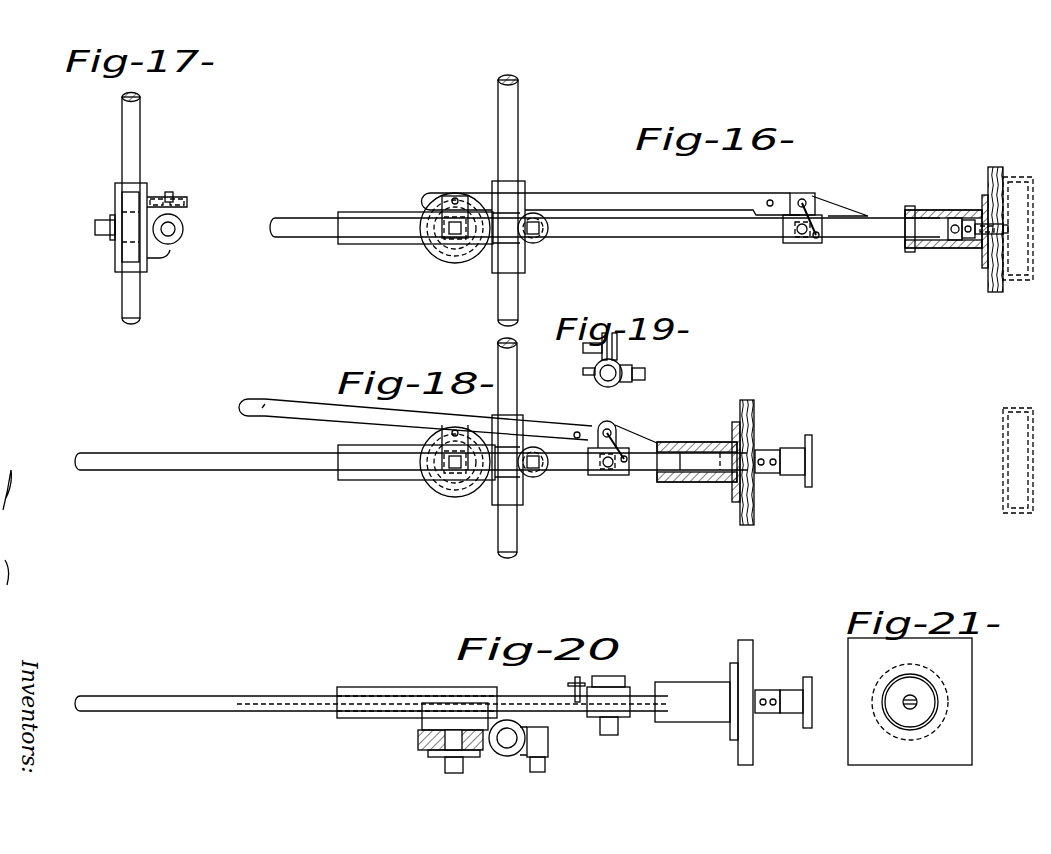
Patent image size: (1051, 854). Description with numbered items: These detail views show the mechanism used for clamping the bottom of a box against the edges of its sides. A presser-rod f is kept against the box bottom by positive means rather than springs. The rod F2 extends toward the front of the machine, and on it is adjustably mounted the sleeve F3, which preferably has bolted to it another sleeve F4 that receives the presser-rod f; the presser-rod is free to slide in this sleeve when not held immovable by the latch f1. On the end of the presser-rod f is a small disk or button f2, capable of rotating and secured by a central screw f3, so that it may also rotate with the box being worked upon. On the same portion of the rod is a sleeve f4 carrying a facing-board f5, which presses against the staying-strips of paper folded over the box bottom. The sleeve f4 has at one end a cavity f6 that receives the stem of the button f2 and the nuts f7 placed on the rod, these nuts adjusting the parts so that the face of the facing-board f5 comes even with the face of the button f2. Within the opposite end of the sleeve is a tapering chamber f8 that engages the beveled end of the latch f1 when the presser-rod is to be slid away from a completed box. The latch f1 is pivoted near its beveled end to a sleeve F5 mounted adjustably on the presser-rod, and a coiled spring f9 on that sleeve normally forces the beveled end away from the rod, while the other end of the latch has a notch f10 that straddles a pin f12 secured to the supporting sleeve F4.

In FIG. 16, the presser-rod f is at (605, 233).
In FIG. 18, the presser-rod f is at (411, 467).
In FIG. 20, the presser-rod f is at (371, 699).
In FIG. 16, the latch f1 is at (645, 198).
In FIG. 18, the latch f1 is at (461, 410).
In FIG. 16, the disk or button f2 is at (1003, 228).
In FIG. 18, the disk or button f2 is at (812, 462).
In FIG. 20, the disk or button f2 is at (808, 702).
In FIG. 21, the disk or button f2 is at (910, 702).
In FIG. 16, the central screw f3 is at (1006, 233).
In FIG. 21, the central screw f3 is at (917, 701).
In FIG. 16, the sleeve f4 is at (954, 218).
In FIG. 18, the sleeve f4 is at (694, 446).
In FIG. 20, the sleeve f4 is at (692, 702).
In FIG. 16, the facing-board f5 is at (991, 218).
In FIG. 18, the facing-board f5 is at (753, 461).
In FIG. 20, the facing-board f5 is at (743, 691).
In FIG. 21, the facing-board f5 is at (910, 701).
In FIG. 16, the cavity f6 is at (968, 220).
In FIG. 18, the cavity f6 is at (720, 483).
In FIG. 18, the nuts f7 is at (768, 474).
In FIG. 20, the nuts f7 is at (764, 713).
In FIG. 16, the tapering chamber f8 is at (926, 248).
In FIG. 18, the tapering chamber f8 is at (670, 483).
In FIG. 16, the coiled spring f9 is at (771, 200).
In FIG. 18, the coiled spring f9 is at (578, 432).
In FIG. 20, the coiled spring f9 is at (582, 683).
In FIG. 18, the notch f10 is at (258, 398).
In FIG. 17, the pin f12 is at (169, 194).
In FIG. 16, the pin f12 is at (455, 198).
In FIG. 18, the pin f12 is at (457, 430).
In FIG. 17, the rod F2 is at (150, 135).
In FIG. 16, the rod F2 is at (535, 124).
In FIG. 18, the rod F2 is at (535, 384).
In FIG. 16, the sleeve F3 is at (484, 228).
In FIG. 18, the sleeve F3 is at (472, 515).
In FIG. 20, the sleeve F3 is at (508, 773).
In FIG. 17, the sleeve F4 is at (176, 230).
In FIG. 16, the sleeve F4 is at (380, 232).
In FIG. 18, the sleeve F4 is at (380, 466).
In FIG. 20, the sleeve F4 is at (382, 678).
In FIG. 16, the sleeve F5 is at (800, 193).
In FIG. 19, the sleeve F5 is at (640, 358).
In FIG. 18, the sleeve F5 is at (608, 429).
In FIG. 20, the sleeve F5 is at (622, 718).